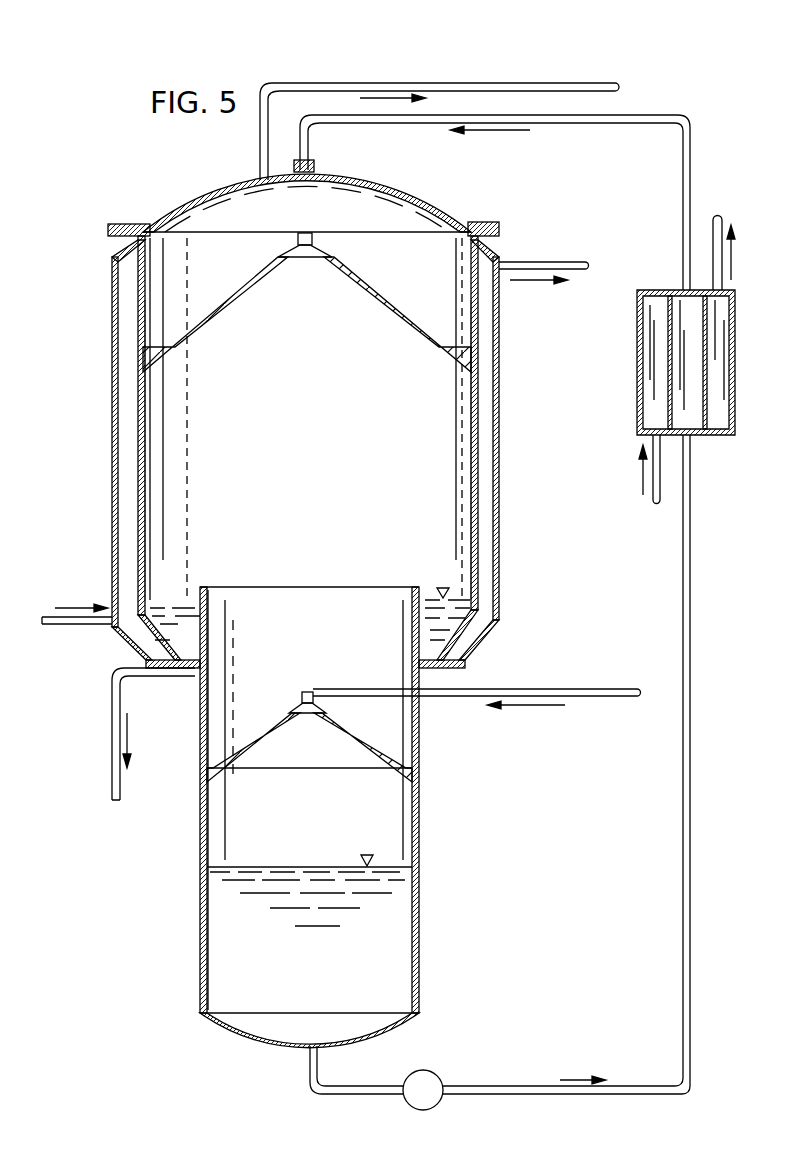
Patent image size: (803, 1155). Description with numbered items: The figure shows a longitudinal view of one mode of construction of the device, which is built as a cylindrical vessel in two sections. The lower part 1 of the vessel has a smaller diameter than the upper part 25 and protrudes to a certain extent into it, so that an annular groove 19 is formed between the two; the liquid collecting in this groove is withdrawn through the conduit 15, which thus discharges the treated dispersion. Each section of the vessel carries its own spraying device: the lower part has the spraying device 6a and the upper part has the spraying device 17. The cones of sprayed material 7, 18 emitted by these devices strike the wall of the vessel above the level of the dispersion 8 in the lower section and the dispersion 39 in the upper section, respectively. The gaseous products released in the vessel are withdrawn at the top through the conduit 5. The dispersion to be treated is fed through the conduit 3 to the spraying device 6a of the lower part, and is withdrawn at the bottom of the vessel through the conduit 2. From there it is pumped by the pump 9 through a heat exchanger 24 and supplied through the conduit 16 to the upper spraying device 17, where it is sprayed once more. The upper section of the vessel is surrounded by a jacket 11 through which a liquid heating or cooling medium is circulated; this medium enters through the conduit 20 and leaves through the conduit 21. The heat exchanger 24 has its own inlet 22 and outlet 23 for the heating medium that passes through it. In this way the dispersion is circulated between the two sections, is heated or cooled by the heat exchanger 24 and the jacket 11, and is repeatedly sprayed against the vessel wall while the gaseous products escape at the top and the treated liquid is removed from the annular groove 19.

The lower part of the vessel 1 is at (200, 893).
The conduit 2 is at (308, 1078).
The conduit 3 is at (593, 697).
The conduit 5 is at (618, 87).
The spraying device 6a is at (297, 703).
The cone of sprayed material 7 is at (411, 790).
The dispersion 8 is at (387, 957).
The pump 9 is at (437, 1074).
The jacket 11 is at (500, 483).
The conduit 15 is at (122, 782).
The conduit 16 is at (582, 125).
The spraying device 17 is at (320, 253).
The cone of sprayed material 18 is at (469, 378).
The annular groove 19 is at (482, 642).
The conduit 20 is at (75, 626).
The conduit 21 is at (565, 264).
The inlet 22 is at (652, 503).
The outlet 23 is at (713, 222).
The heat exchanger 24 is at (636, 360).
The upper part of the vessel 25 is at (479, 417).
The dispersion 39 is at (177, 632).